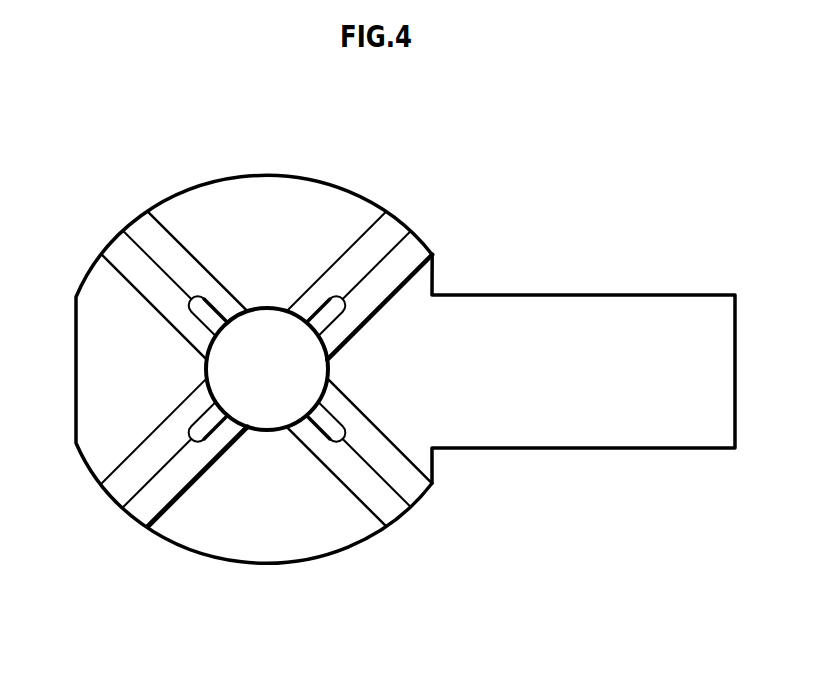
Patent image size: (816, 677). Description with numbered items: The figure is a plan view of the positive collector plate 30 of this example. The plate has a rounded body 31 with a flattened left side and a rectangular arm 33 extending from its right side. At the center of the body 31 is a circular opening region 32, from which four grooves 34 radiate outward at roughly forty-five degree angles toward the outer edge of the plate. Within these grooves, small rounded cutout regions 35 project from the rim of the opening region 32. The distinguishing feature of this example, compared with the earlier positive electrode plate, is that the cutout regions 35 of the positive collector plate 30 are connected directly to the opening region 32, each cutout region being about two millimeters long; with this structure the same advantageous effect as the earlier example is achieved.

The positive collector plate 30 is at (373, 355).
The circular body portion 31 is at (88, 362).
The opening region 32 is at (230, 368).
The arm portion 33 is at (640, 305).
The grooves 34 is at (393, 222).
The cutout regions 35 is at (200, 317).